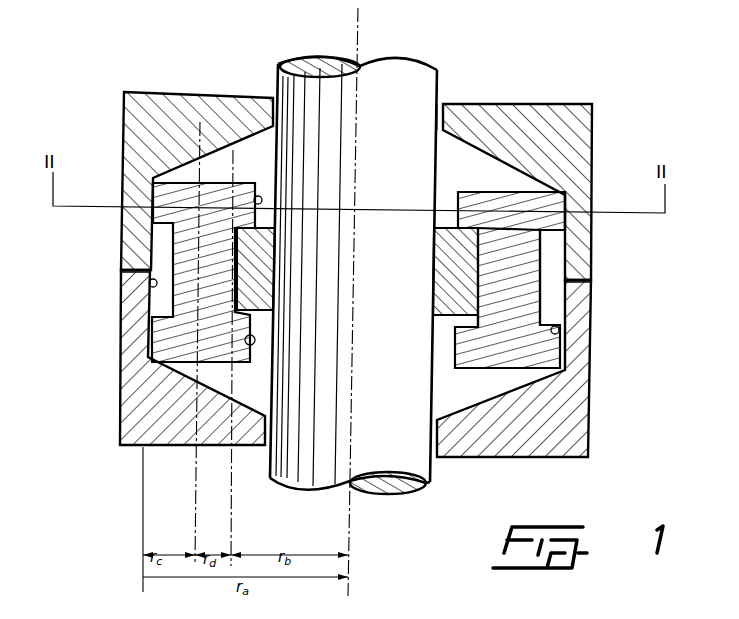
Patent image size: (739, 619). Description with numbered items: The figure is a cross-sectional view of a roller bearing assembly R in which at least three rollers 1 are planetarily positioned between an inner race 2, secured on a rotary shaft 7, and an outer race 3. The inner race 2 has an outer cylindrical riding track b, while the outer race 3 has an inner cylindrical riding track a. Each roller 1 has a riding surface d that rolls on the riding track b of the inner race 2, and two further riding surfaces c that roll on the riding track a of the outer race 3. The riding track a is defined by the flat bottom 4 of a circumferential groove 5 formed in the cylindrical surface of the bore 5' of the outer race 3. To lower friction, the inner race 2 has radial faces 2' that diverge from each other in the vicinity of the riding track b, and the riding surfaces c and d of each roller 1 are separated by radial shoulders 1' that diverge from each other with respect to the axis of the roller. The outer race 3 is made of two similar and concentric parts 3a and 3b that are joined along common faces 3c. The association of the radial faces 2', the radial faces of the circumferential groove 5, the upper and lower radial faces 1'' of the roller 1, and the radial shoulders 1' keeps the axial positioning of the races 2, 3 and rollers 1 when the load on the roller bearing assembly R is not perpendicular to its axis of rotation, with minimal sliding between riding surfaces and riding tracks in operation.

The roller 1 is at (399, 275).
The radial shoulders 1' is at (579, 280).
The upper and lower radial faces 1'' is at (568, 279).
The inner race 2 is at (558, 287).
The radial faces 2' is at (565, 233).
The outer race 3 is at (583, 148).
The part of the outer race 3a is at (585, 115).
The part of the outer race 3b is at (592, 456).
The common faces 3c is at (592, 283).
The flat bottom 4 is at (545, 312).
The circumferential groove 5 is at (538, 396).
The bore 5' is at (450, 276).
The rotary shaft 7 is at (372, 88).
The roller bearing assembly R is at (560, 68).
The riding track a is at (150, 285).
The riding track b is at (148, 316).
The riding surfaces c is at (125, 196).
The riding surface d is at (150, 243).